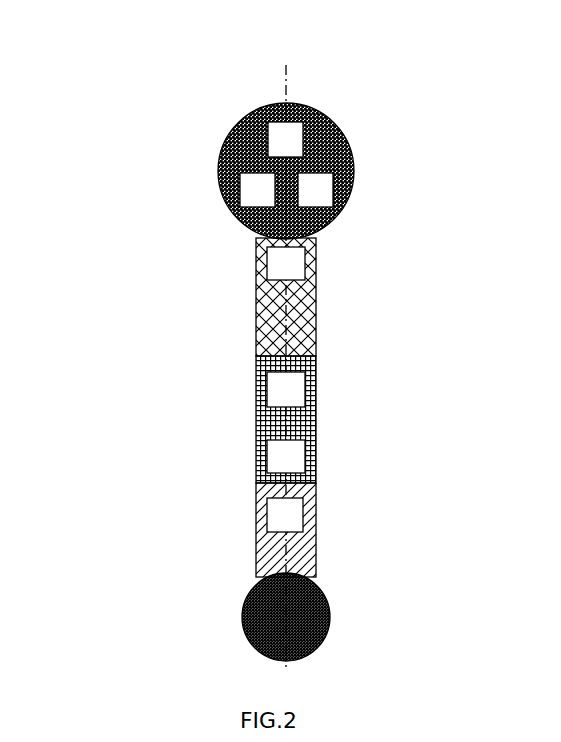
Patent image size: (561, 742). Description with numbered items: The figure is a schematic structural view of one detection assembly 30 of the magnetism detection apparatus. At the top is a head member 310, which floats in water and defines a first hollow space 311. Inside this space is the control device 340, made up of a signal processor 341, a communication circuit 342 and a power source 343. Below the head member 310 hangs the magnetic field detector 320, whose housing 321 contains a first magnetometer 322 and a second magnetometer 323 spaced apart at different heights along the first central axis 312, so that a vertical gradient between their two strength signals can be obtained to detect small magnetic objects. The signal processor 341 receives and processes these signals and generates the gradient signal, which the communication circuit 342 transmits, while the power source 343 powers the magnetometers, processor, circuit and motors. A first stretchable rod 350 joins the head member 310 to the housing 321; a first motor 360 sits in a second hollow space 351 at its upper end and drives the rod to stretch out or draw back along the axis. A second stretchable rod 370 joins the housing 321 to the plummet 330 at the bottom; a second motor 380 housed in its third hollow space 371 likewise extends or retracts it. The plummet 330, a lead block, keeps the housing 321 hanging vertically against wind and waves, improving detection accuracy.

The detection assembly 30 is at (315, 45).
The head member 310 is at (345, 210).
The first hollow space 311 is at (343, 160).
The first central axis 312 is at (288, 92).
The control device 340 is at (135, 128).
The signal processor 341 is at (308, 205).
The communication circuit 342 is at (282, 137).
The power source 343 is at (253, 189).
The first stretchable rod 350 is at (317, 258).
The second hollow space 351 is at (296, 324).
The first motor 360 is at (298, 268).
The magnetic field detector 320 is at (412, 355).
The housing 321 is at (315, 422).
The first magnetometer 322 is at (295, 385).
The second magnetometer 323 is at (297, 457).
The second stretchable rod 370 is at (317, 505).
The third hollow space 371 is at (316, 573).
The second motor 380 is at (303, 520).
The plummet 330 is at (313, 625).